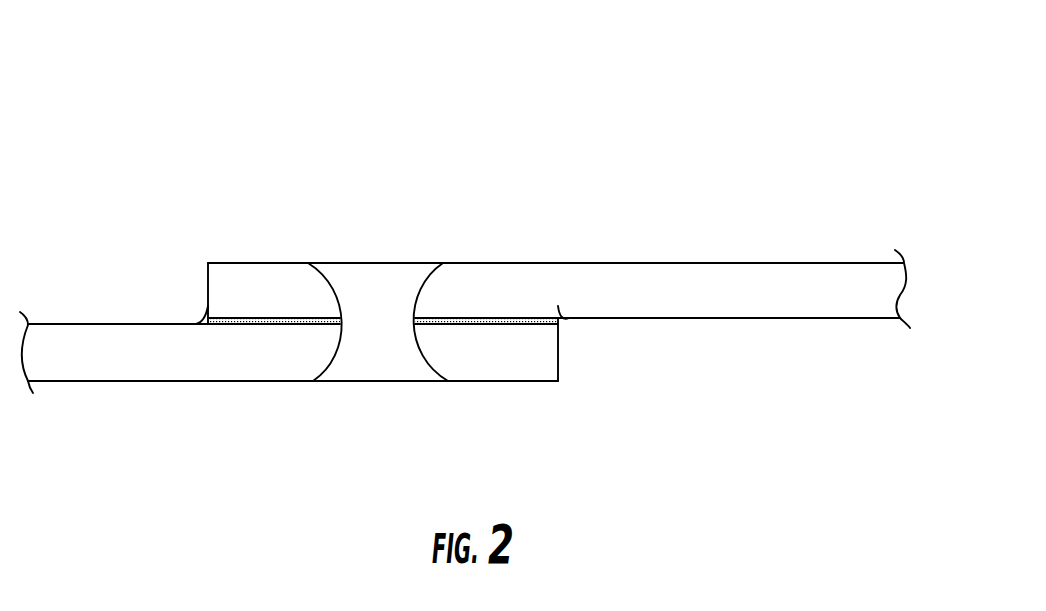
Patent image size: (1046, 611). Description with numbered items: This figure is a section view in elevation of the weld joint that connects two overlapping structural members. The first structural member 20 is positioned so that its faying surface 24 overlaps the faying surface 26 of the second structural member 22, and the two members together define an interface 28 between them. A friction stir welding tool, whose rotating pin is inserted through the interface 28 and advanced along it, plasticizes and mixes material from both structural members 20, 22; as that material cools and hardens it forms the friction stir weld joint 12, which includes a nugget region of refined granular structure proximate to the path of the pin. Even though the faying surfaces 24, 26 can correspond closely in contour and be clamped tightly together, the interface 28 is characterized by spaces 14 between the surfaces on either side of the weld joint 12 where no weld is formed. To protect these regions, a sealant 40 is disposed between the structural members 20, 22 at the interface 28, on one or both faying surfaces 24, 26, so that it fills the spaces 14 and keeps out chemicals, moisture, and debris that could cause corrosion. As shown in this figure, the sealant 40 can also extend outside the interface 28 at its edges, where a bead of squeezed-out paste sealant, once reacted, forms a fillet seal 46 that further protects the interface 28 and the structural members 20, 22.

The friction stir weld joint 12 is at (428, 125).
The spaces 14 is at (287, 319).
The first structural member 20 is at (693, 262).
The second structural member 22 is at (118, 381).
The faying surface 24 is at (497, 325).
The faying surface 26 is at (258, 321).
The interface 28 is at (468, 318).
The sealant 40 is at (318, 325).
The fillet seal 46 is at (197, 323).